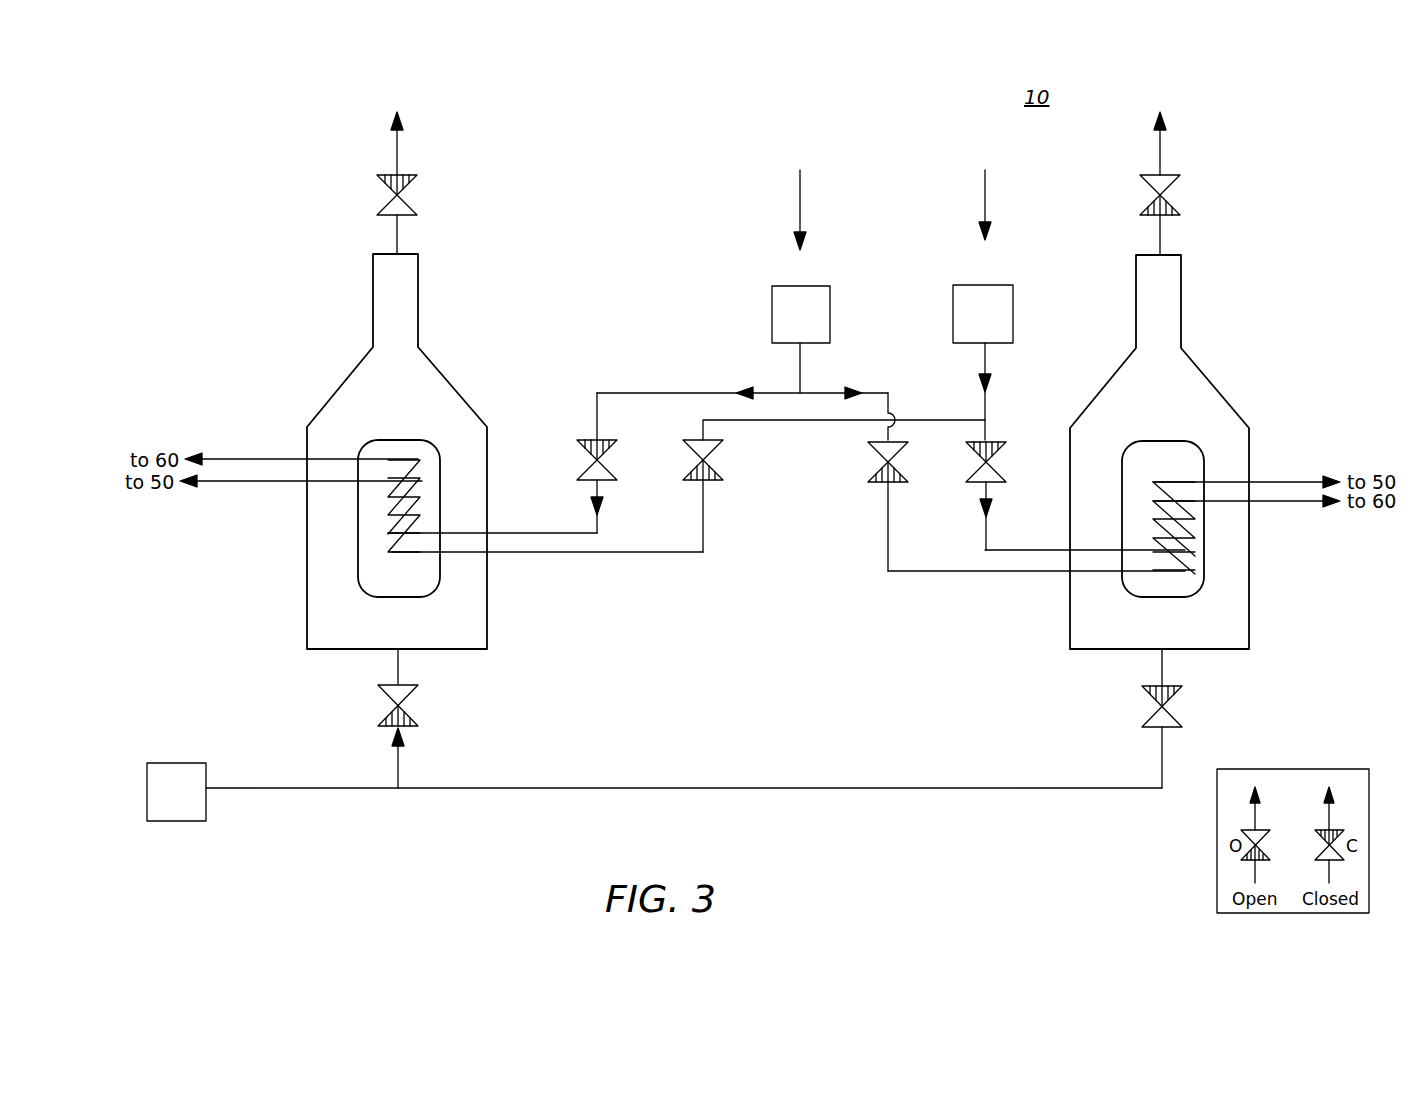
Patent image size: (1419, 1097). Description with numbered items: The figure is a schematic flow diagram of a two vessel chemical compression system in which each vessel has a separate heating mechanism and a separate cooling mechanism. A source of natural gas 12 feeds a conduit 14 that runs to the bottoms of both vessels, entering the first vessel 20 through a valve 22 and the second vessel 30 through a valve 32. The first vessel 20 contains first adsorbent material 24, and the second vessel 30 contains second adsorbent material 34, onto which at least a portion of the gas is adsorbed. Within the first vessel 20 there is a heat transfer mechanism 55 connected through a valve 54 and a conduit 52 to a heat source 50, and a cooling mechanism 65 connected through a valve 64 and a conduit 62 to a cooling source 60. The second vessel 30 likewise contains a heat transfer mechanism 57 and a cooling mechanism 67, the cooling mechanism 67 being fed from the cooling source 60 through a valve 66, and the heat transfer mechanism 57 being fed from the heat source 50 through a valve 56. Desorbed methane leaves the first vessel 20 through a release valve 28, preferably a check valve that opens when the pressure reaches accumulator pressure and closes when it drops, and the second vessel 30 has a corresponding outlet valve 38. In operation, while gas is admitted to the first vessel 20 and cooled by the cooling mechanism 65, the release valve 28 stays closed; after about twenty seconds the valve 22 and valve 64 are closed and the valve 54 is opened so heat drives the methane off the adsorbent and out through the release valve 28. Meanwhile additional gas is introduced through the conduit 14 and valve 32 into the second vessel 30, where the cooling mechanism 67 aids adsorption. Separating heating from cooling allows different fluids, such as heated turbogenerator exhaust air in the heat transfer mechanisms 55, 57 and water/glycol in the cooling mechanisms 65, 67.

The source of natural gas 12 is at (176, 792).
The conduit 14 is at (310, 788).
The first vessel 20 is at (382, 370).
The valve 22 is at (388, 708).
The first adsorbent material 24 is at (384, 448).
The release valve 28 is at (383, 200).
The second vessel 30 is at (1165, 312).
The valve 32 is at (1178, 712).
The second adsorbent material 34 is at (1162, 452).
The outlet valve 38 is at (1172, 186).
The heat source 50 is at (983, 256).
The conduit 52 is at (985, 360).
The valve 54 is at (712, 482).
The heat transfer mechanism 55 is at (392, 502).
The valve 56 is at (976, 484).
The heat transfer mechanism 57 is at (1182, 522).
The cooling source 60 is at (801, 281).
The conduit 62 is at (800, 372).
The valve 64 is at (592, 440).
The cooling mechanism 65 is at (395, 553).
The valve 66 is at (880, 482).
The cooling mechanism 67 is at (1187, 556).